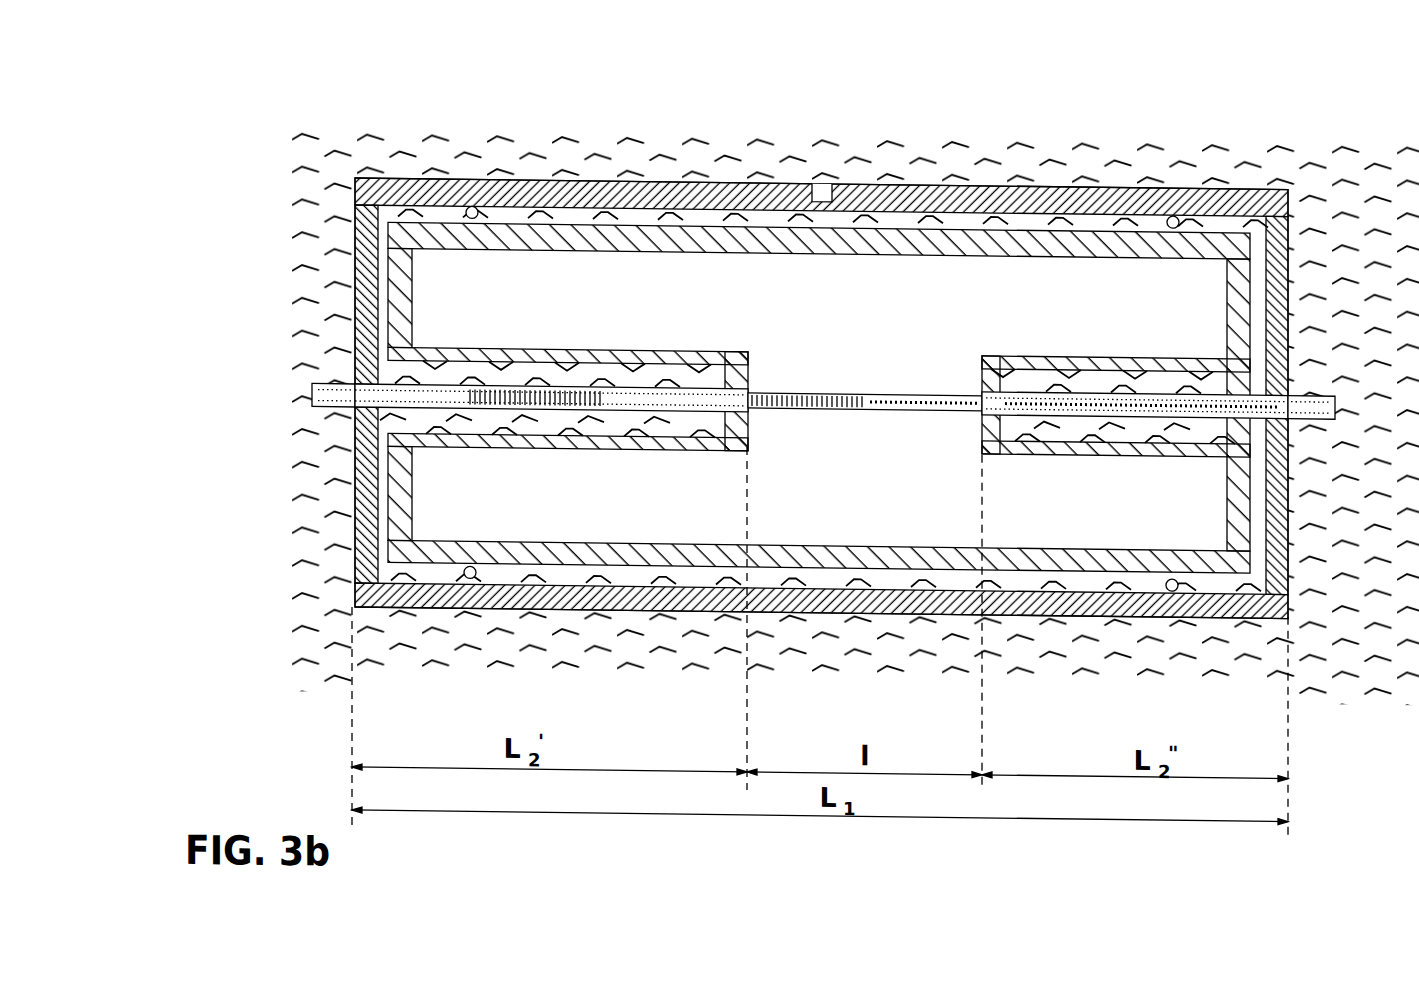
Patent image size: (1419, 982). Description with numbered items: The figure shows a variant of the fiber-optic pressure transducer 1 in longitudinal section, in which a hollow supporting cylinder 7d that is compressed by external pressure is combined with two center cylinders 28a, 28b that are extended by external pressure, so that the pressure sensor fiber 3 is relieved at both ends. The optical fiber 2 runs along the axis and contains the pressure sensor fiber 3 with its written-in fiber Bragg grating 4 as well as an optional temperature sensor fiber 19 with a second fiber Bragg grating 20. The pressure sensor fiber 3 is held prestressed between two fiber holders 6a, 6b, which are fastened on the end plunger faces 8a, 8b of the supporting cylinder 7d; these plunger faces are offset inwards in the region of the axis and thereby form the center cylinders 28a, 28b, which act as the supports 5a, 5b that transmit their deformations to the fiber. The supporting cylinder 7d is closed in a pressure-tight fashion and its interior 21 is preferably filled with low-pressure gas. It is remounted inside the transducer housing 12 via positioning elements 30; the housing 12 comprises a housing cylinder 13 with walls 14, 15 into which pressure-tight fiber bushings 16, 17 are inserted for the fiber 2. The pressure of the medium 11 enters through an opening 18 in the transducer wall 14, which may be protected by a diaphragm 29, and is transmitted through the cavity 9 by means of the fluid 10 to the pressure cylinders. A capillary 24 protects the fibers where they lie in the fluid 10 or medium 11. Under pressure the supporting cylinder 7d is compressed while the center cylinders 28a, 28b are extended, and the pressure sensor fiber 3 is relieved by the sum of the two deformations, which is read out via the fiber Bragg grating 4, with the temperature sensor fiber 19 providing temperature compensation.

The transducer 1 is at (256, 128).
The optical fiber 2 is at (310, 390).
The pressure sensor fiber 3 is at (934, 393).
The fiber Bragg grating 4 is at (840, 399).
The first support 5a is at (800, 252).
The second support 5b is at (920, 248).
The fiber holder 6a is at (763, 423).
The fiber holder 6b is at (1103, 373).
The supporting cylinder 7d is at (737, 420).
The end plunger face 8a is at (360, 282).
The end plunger face 8b is at (1290, 295).
The cavity 9 is at (722, 376).
The fluid 10 is at (683, 380).
The medium 11 is at (628, 152).
The transducer housing 12 is at (573, 169).
The housing cylinder 13 is at (543, 382).
The transducer wall 14 is at (360, 537).
The transducer wall 15 is at (1292, 521).
The fiber bushing 16 is at (347, 378).
The fiber bushing 17 is at (1293, 381).
The opening 18 is at (823, 179).
The temperature sensor fiber 19 is at (498, 298).
The fiber Bragg grating 20 is at (522, 222).
The housing interior 21 is at (450, 211).
The capillary 24 is at (615, 404).
The center cylinder 28a is at (628, 422).
The center cylinder 28b is at (1120, 435).
The diaphragm 29 is at (845, 161).
The positioning elements 30 is at (465, 205).